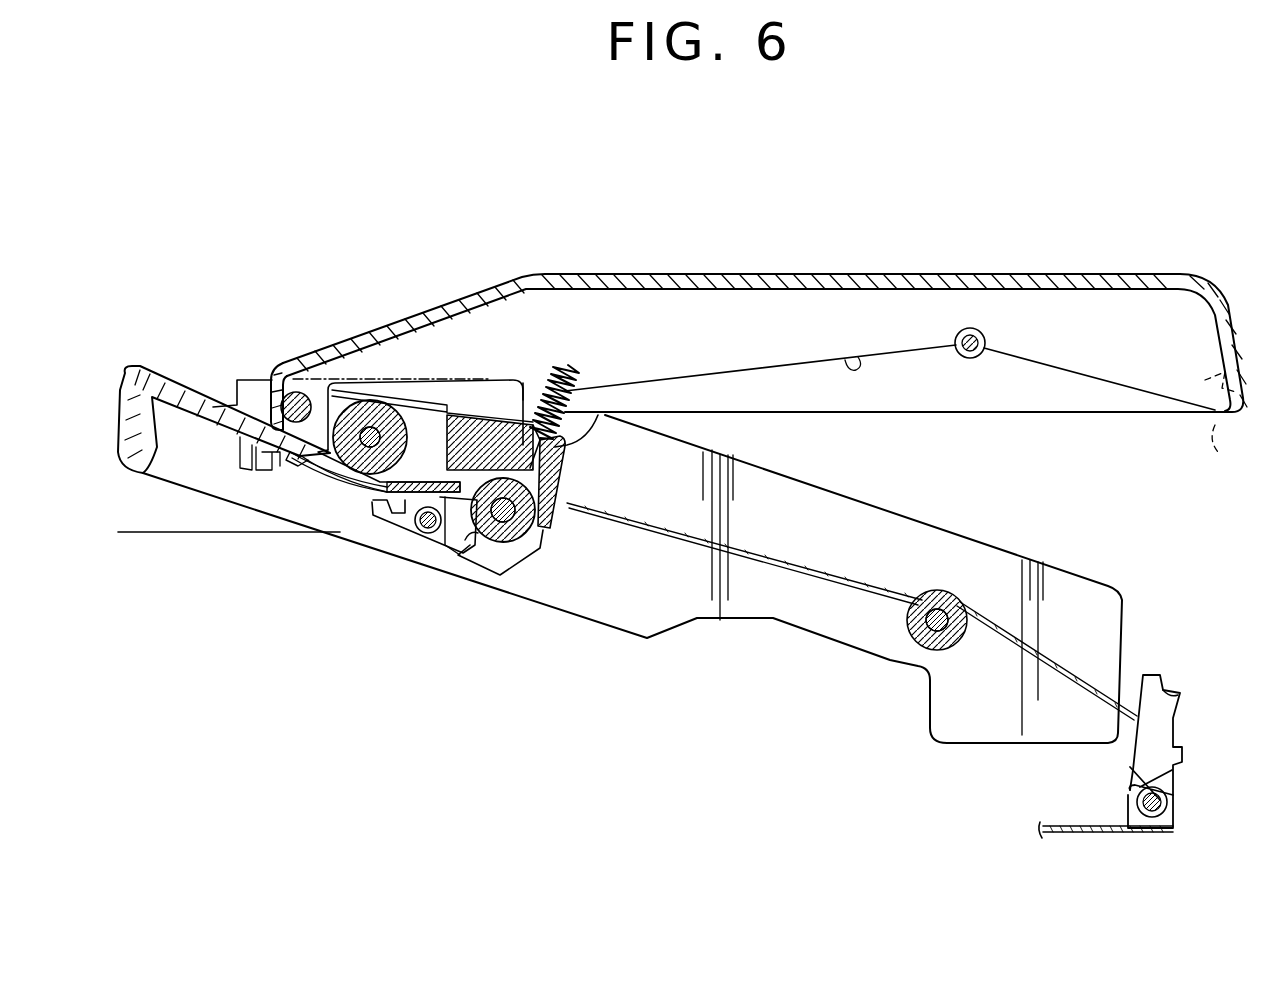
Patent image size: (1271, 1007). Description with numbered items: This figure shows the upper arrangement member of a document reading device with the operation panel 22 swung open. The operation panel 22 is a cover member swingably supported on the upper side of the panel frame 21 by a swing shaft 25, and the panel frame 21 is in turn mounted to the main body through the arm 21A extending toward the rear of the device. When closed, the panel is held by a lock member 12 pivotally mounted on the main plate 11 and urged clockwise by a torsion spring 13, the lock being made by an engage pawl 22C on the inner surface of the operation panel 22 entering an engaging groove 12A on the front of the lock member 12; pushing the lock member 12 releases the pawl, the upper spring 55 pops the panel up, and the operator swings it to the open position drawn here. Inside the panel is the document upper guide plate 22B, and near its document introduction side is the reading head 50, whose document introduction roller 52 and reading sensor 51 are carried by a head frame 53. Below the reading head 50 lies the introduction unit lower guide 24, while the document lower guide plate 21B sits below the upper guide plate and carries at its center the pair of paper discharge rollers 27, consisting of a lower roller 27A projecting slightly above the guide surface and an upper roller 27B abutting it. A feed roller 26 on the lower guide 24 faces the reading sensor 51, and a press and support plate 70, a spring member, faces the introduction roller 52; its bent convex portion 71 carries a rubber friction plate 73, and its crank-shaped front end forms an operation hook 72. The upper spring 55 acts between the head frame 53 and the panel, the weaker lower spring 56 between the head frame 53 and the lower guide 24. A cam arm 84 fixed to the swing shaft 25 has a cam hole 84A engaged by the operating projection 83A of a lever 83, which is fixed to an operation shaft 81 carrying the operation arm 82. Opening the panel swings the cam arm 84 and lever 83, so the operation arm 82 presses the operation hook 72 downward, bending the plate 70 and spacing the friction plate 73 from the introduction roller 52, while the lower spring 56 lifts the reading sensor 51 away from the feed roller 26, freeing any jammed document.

The main plate 11 is at (1095, 835).
The lock member 12 is at (1165, 725).
The engaging groove 12A is at (1178, 700).
The torsion spring 13 is at (1162, 783).
The panel frame 21 is at (1022, 720).
The arm 21A is at (158, 500).
The document lower guide plate 21B is at (820, 565).
The operation panel 22 is at (942, 274).
The document upper guide plate 22B is at (845, 360).
The engage pawl 22C is at (1234, 415).
The introduction unit lower guide 24 is at (162, 366).
The swing shaft 25 is at (291, 392).
The feed roller 26 is at (512, 552).
The pair of paper discharge rollers 27 is at (890, 489).
The lower roller 27A is at (948, 592).
The upper roller 27B is at (970, 358).
The reading head 50 is at (312, 222).
The reading sensor 51 is at (470, 395).
The document introduction roller 52 is at (363, 400).
The head frame 53 is at (430, 400).
The upper spring 55 is at (566, 368).
The lower spring 56 is at (568, 445).
The press and support plate 70 is at (337, 597).
The convex portion 71 is at (318, 478).
The operation hook 72 is at (378, 490).
The friction plate 73 is at (297, 478).
The operation shaft 81 is at (428, 538).
The operation arm 82 is at (400, 517).
The lever 83 is at (465, 460).
The operating projection 83A is at (480, 540).
The cam arm 84 is at (468, 400).
The cam hole 84A is at (497, 420).